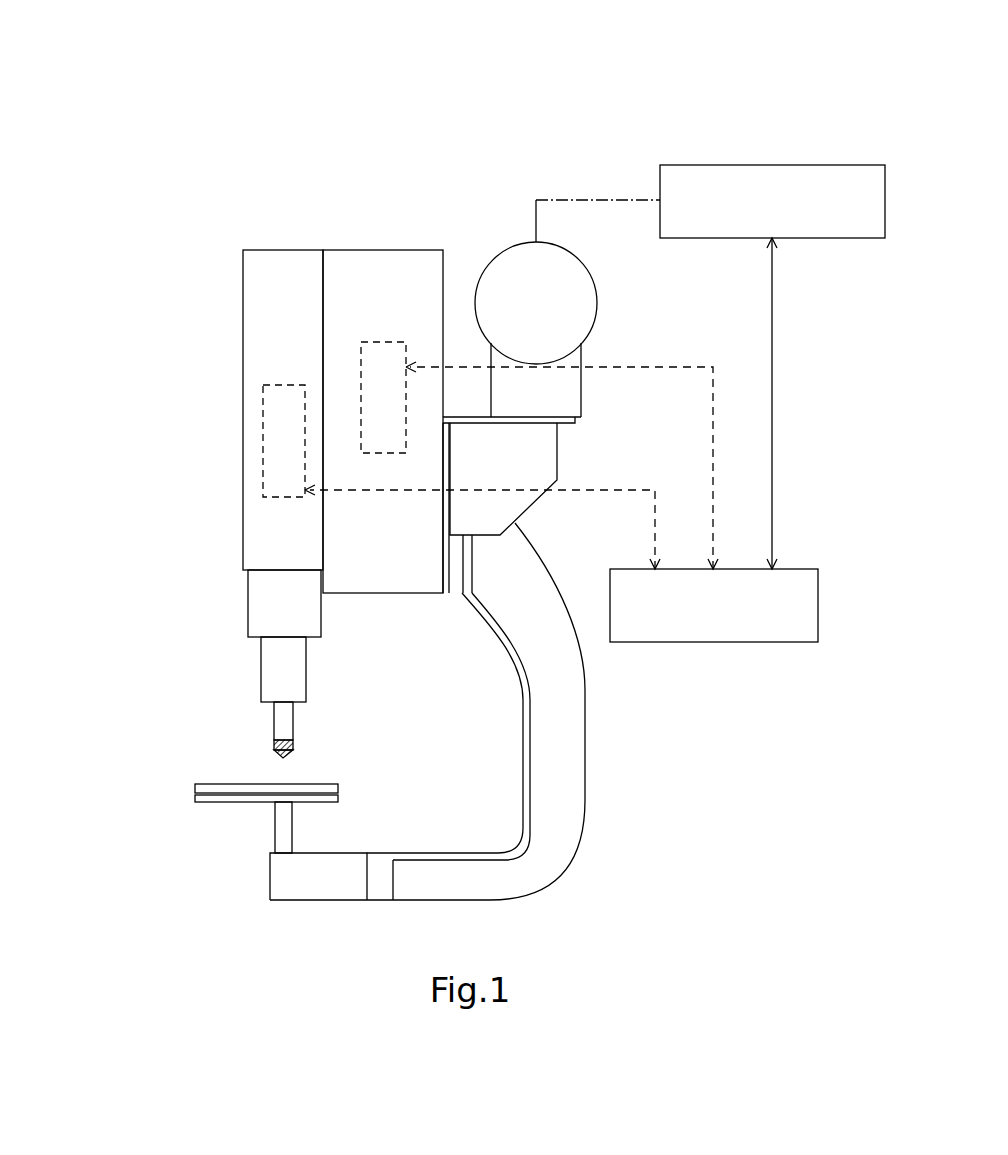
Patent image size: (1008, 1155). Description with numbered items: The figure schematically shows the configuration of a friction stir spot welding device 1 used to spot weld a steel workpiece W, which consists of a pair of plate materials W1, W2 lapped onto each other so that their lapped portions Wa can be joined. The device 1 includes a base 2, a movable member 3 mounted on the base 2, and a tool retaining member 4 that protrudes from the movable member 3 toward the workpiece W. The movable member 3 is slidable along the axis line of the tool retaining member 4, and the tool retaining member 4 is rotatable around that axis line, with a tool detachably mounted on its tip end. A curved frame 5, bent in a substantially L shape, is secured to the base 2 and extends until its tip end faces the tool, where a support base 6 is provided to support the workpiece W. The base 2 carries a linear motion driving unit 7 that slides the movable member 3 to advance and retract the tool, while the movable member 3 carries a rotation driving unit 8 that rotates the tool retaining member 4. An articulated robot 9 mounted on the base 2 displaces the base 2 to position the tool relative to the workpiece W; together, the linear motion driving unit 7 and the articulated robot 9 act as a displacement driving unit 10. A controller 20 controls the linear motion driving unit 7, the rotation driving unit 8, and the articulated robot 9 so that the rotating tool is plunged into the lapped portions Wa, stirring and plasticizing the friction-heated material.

The friction stir spot welding device 1 is at (216, 212).
The base 2 is at (428, 250).
The movable member 3 is at (243, 308).
The tool retaining member 4 is at (261, 672).
The curved frame 5 is at (585, 785).
The support base 6 is at (272, 830).
The linear motion driving unit 7 is at (376, 342).
The rotation driving unit 8 is at (285, 385).
The articulated robot 9 is at (718, 165).
The displacement driving unit 10 is at (280, 762).
The controller 20 is at (710, 645).
The workpiece W is at (70, 745).
The plate material W1 is at (216, 775).
The plate material W2 is at (216, 810).
The lapped portions Wa is at (338, 785).